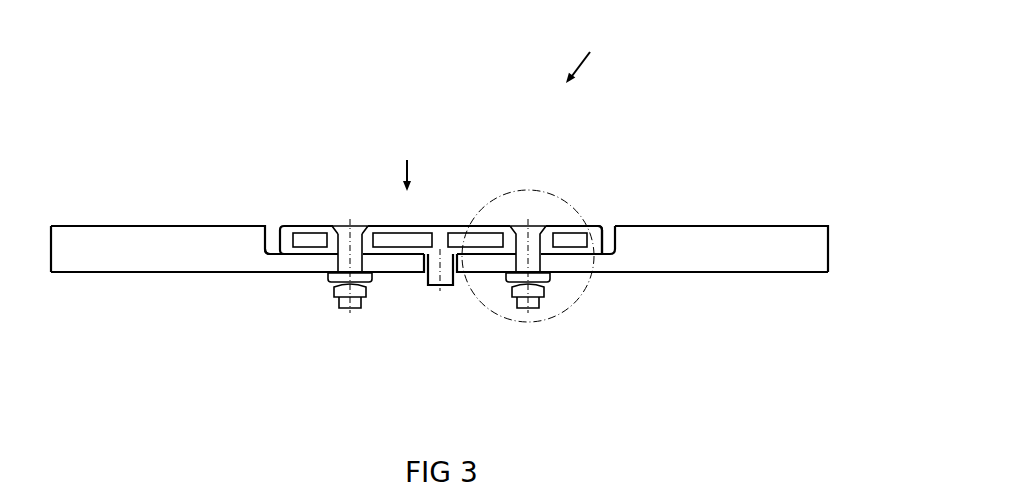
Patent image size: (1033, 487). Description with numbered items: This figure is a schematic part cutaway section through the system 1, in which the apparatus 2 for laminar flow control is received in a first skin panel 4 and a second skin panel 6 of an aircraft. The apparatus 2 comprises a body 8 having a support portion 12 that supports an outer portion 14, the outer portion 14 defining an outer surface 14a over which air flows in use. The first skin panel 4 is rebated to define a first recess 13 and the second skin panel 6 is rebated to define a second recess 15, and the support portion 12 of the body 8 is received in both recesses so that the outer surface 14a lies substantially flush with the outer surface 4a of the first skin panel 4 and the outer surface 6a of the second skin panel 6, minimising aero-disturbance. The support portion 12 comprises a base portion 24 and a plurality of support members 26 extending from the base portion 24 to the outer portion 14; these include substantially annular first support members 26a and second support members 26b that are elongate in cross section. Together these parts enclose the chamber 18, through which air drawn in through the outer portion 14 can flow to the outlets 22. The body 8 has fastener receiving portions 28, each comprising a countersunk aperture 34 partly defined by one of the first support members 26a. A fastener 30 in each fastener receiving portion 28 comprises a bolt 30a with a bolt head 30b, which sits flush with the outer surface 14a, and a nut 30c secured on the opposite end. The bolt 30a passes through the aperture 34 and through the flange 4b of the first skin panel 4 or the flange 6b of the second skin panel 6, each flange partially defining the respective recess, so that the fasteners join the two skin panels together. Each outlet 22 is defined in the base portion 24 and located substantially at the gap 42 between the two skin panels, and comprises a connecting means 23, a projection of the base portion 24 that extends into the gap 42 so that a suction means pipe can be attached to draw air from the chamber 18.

The system 1 is at (463, 236).
The apparatus for laminar flow control 2 is at (407, 163).
The first skin panel 4 is at (237, 293).
The outer surface of first skin panel 4a is at (194, 249).
The flange of first skin panel 4b is at (322, 265).
The second skin panel 6 is at (666, 282).
The outer surface of second skin panel 6a is at (721, 249).
The flange of second skin panel 6b is at (578, 265).
The body 8 is at (602, 228).
The support portion 12 is at (286, 253).
The first recess 13 is at (267, 257).
The outer portion 14 is at (406, 240).
The outer surface of outer portion 14a is at (441, 240).
The second recess 15 is at (610, 257).
The chamber 18 is at (582, 228).
The outlet 22 is at (466, 328).
The connecting means 23 is at (428, 290).
The base portion 24 is at (322, 252).
The support member 26 is at (550, 168).
The first support member 26a is at (636, 168).
The second support member 26b is at (443, 228).
The fastener receiving portion 28 is at (542, 192).
The fastener 30 is at (350, 243).
The bolt 30a is at (355, 227).
The bolt head 30b is at (342, 227).
The nut 30c is at (353, 308).
The aperture 34 is at (331, 227).
The gap 42 is at (444, 328).